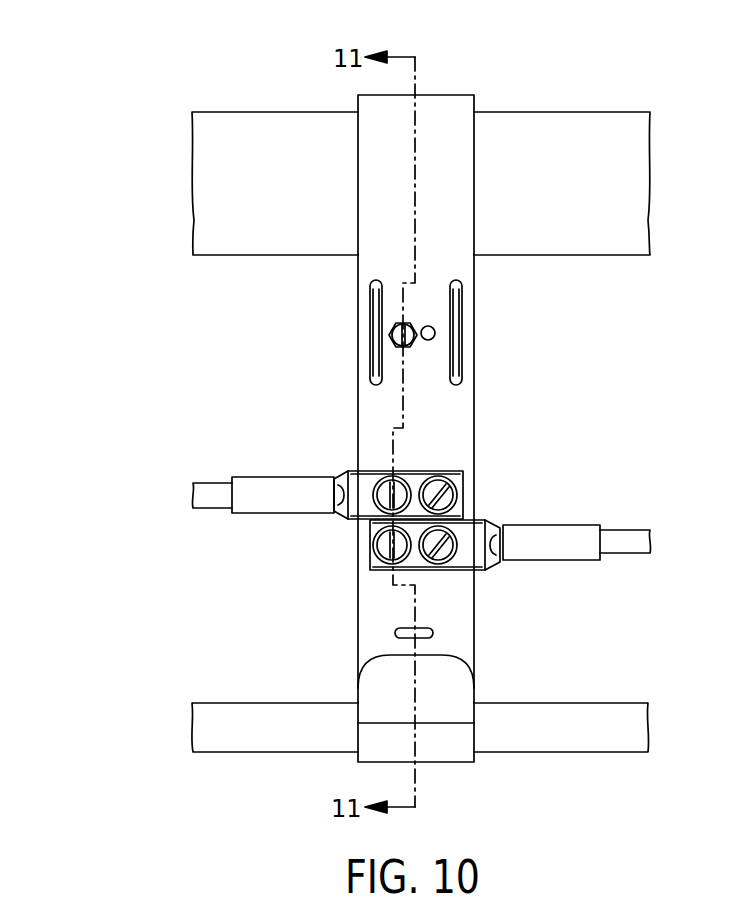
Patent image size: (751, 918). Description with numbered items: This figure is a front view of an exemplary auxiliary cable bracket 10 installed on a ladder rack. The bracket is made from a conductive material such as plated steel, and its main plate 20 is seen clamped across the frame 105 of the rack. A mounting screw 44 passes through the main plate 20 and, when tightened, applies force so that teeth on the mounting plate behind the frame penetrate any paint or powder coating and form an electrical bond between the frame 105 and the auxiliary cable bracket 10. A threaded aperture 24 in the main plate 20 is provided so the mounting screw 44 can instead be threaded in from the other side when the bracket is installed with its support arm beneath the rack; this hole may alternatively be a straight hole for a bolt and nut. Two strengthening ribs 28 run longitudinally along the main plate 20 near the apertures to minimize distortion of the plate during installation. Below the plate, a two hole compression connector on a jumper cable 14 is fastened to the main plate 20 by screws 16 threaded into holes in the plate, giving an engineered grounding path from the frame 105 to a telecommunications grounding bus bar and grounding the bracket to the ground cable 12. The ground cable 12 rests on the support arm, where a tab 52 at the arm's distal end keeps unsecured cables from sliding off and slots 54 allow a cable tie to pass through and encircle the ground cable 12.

The auxiliary cable bracket 10 is at (335, 419).
The ground cable 12 is at (545, 738).
The jumper cable 14 is at (218, 488).
The screws 16 is at (374, 490).
The main plate 20 is at (375, 400).
The threaded aperture 24 is at (436, 336).
The strengthening ribs 28 is at (376, 312).
The mounting screw 44 is at (392, 336).
The tab 52 is at (457, 682).
The slots 54 is at (437, 628).
The frame 105 is at (524, 122).